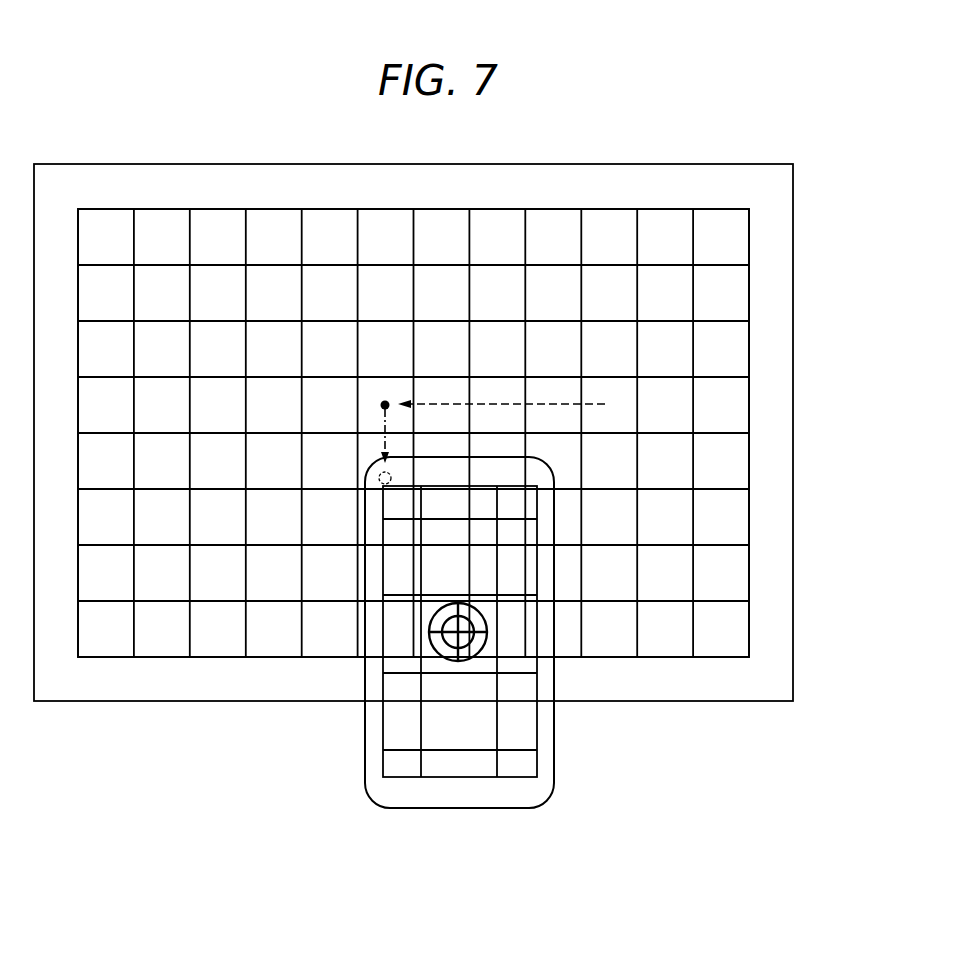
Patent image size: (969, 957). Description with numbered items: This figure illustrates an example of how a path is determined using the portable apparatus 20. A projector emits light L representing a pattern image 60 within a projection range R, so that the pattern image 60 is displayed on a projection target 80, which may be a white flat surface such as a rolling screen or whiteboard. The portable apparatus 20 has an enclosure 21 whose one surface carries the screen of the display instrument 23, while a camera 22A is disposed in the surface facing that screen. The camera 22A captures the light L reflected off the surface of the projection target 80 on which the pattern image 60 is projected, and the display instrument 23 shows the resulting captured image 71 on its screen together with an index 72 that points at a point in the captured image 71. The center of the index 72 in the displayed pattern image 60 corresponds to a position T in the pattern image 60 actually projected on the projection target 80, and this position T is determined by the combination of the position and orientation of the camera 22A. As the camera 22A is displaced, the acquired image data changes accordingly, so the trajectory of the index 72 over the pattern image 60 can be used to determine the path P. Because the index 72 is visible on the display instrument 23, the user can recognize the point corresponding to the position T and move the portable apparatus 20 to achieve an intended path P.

The projection target 80 is at (793, 182).
The pattern image 60 is at (749, 233).
The projection range R is at (749, 297).
The path P is at (556, 404).
The position T is at (381, 404).
The light L is at (383, 437).
The camera 22A is at (379, 477).
The portable apparatus 20 is at (365, 782).
The enclosure 21 is at (373, 755).
The display instrument 23 is at (383, 720).
The captured image 71 is at (522, 752).
The index 72 is at (484, 648).